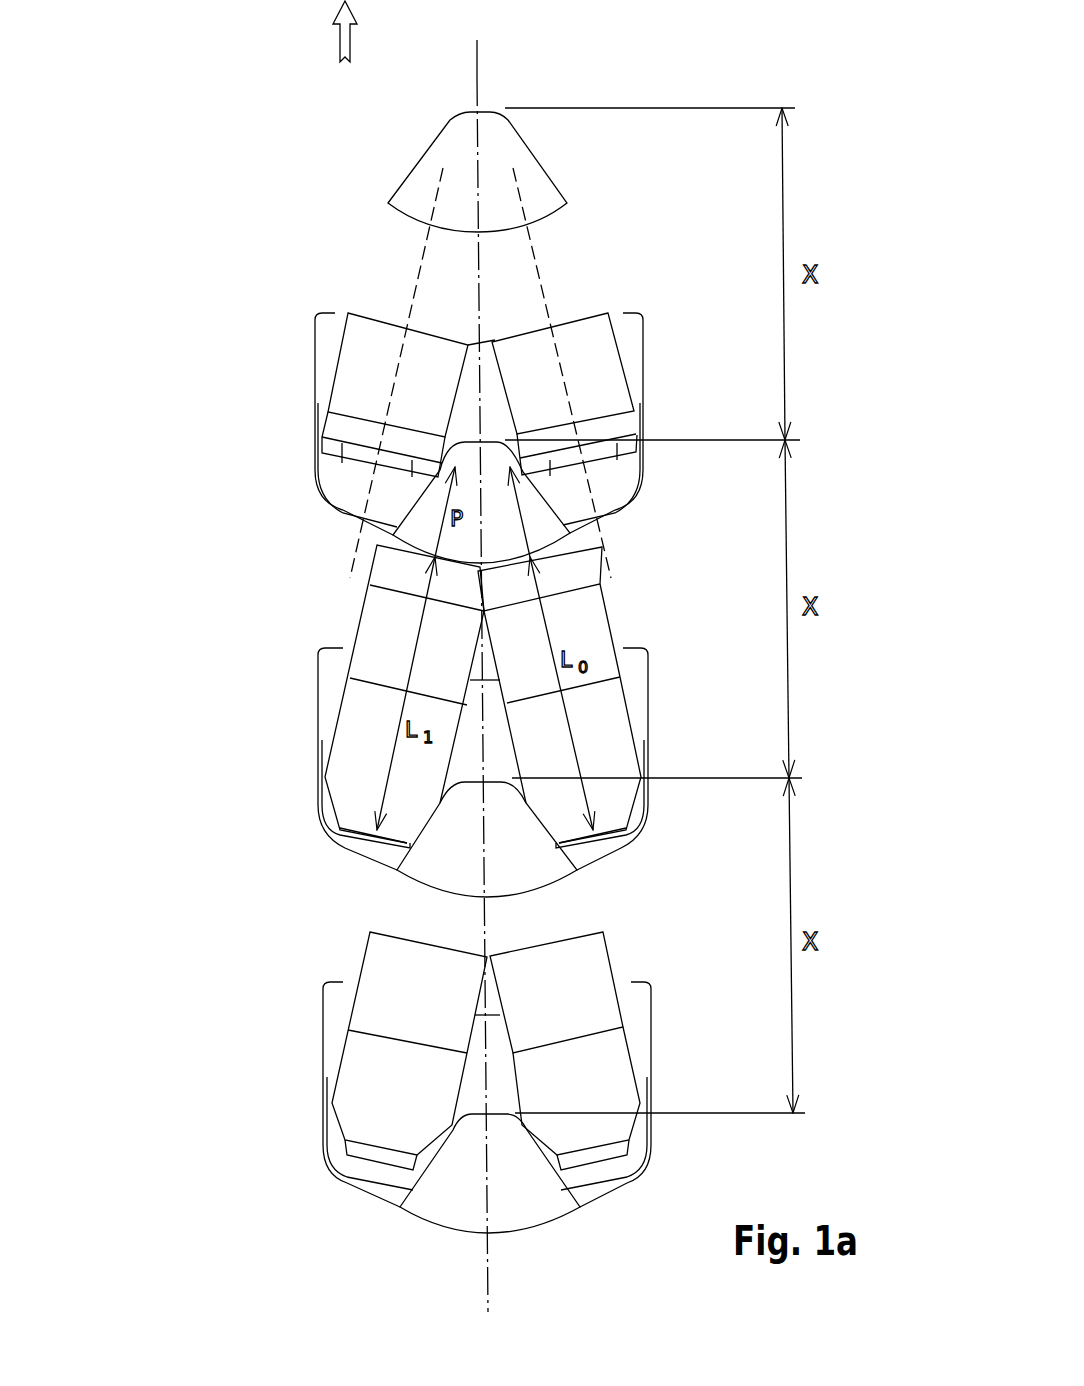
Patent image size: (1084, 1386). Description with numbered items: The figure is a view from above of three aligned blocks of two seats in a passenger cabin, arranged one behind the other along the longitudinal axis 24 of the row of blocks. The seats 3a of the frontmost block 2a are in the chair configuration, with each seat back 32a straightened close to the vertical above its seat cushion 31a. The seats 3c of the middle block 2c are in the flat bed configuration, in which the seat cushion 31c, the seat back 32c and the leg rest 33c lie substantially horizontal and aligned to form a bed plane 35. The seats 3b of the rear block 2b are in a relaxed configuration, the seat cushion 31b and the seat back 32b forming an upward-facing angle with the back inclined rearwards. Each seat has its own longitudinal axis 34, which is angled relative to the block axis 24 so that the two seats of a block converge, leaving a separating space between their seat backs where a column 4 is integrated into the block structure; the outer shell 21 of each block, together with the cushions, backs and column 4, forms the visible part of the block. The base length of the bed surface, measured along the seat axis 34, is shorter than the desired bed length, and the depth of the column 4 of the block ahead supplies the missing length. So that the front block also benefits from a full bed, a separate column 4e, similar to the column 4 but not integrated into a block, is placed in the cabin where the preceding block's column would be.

The longitudinal axis of the block 24 is at (480, 78).
The column 4e is at (420, 178).
The longitudinal axis of the seat 34 is at (420, 266).
The frontmost block 2a is at (276, 515).
The seat in chair configuration 3a is at (364, 303).
The seat cushion 31a is at (596, 343).
The seat back 32a is at (610, 420).
The middle block 2c is at (262, 800).
The outer shell 21 is at (335, 858).
The seat in bed configuration 3c is at (357, 608).
The bed plane 35 is at (366, 711).
The leg rest 33c is at (580, 566).
The seat cushion 31c is at (588, 620).
The seat back 32c is at (600, 726).
The column 4 is at (520, 875).
The rear block 2b is at (240, 1105).
The seat in relaxed configuration 3b is at (358, 948).
The seat cushion 31b is at (588, 960).
The seat back 32b is at (612, 1070).